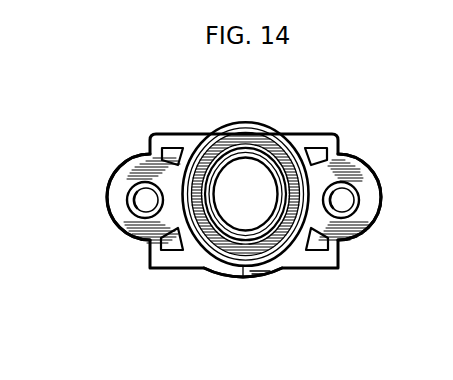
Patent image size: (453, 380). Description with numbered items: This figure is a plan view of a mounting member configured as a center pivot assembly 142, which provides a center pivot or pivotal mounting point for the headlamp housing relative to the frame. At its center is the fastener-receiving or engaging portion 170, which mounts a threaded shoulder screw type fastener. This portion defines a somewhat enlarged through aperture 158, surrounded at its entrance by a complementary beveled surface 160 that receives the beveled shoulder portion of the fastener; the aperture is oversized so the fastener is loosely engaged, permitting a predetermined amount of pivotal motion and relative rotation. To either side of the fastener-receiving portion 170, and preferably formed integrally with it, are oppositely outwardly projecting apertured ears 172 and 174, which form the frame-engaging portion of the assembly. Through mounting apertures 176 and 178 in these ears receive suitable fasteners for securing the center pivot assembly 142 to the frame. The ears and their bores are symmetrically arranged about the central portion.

The center pivot assembly 142 is at (321, 137).
The through aperture 158 is at (272, 152).
The beveled surface 160 is at (241, 170).
The fastener-receiving portion 170 is at (240, 280).
The apertured ear 172 is at (123, 180).
The apertured ear 174 is at (378, 188).
The mounting aperture 176 is at (140, 210).
The mounting aperture 178 is at (330, 208).